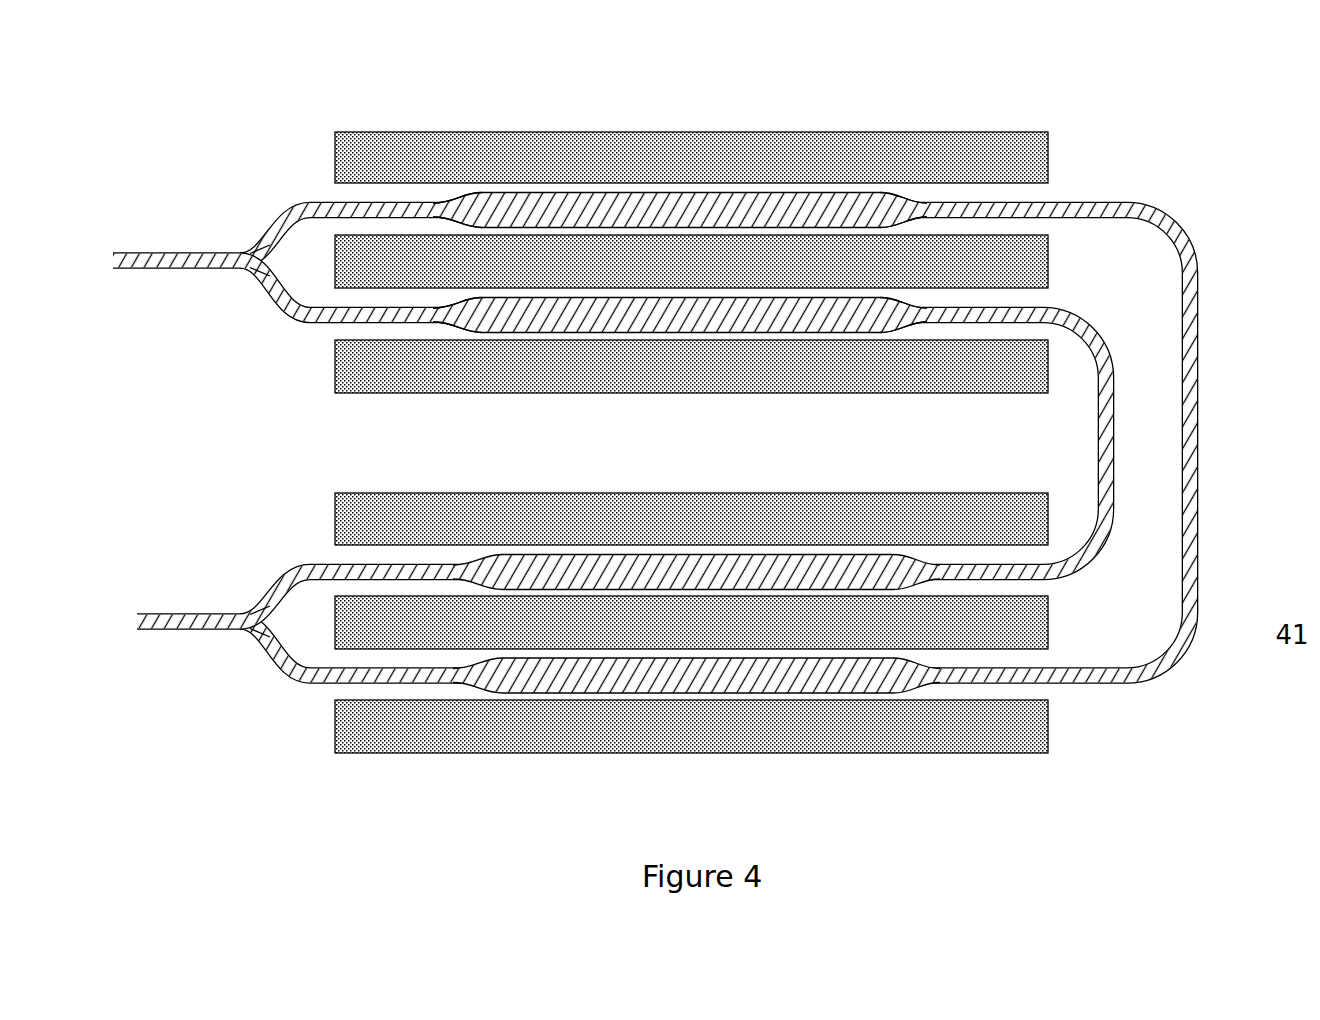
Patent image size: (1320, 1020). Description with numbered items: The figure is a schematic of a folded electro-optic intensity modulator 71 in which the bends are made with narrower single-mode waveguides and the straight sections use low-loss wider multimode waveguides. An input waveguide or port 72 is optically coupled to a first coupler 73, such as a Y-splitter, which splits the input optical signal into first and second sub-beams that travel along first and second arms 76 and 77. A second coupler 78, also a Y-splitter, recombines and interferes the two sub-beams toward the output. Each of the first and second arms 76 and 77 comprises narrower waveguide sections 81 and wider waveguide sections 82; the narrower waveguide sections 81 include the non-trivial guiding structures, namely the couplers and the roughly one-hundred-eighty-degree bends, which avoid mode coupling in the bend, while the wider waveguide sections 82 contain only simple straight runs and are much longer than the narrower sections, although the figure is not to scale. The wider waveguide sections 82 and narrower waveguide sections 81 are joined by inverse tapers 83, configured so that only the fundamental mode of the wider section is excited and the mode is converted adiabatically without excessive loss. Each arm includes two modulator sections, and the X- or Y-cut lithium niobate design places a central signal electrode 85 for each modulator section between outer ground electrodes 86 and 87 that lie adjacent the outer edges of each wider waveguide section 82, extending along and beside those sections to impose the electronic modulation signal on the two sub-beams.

The electro-optic intensity modulator 71 is at (1235, 117).
The input waveguide or port 72 is at (130, 253).
The first coupler 73 is at (250, 268).
The first arm 76 is at (291, 192).
The second arm 77 is at (300, 334).
The second coupler 78 is at (263, 612).
The narrower waveguide section 81 is at (1198, 388).
The wider waveguide section 82 is at (590, 310).
The inverse taper 83 is at (445, 310).
The central signal electrode 85 is at (1046, 262).
The outer ground electrode 86 is at (782, 137).
The outer ground electrode 87 is at (718, 382).